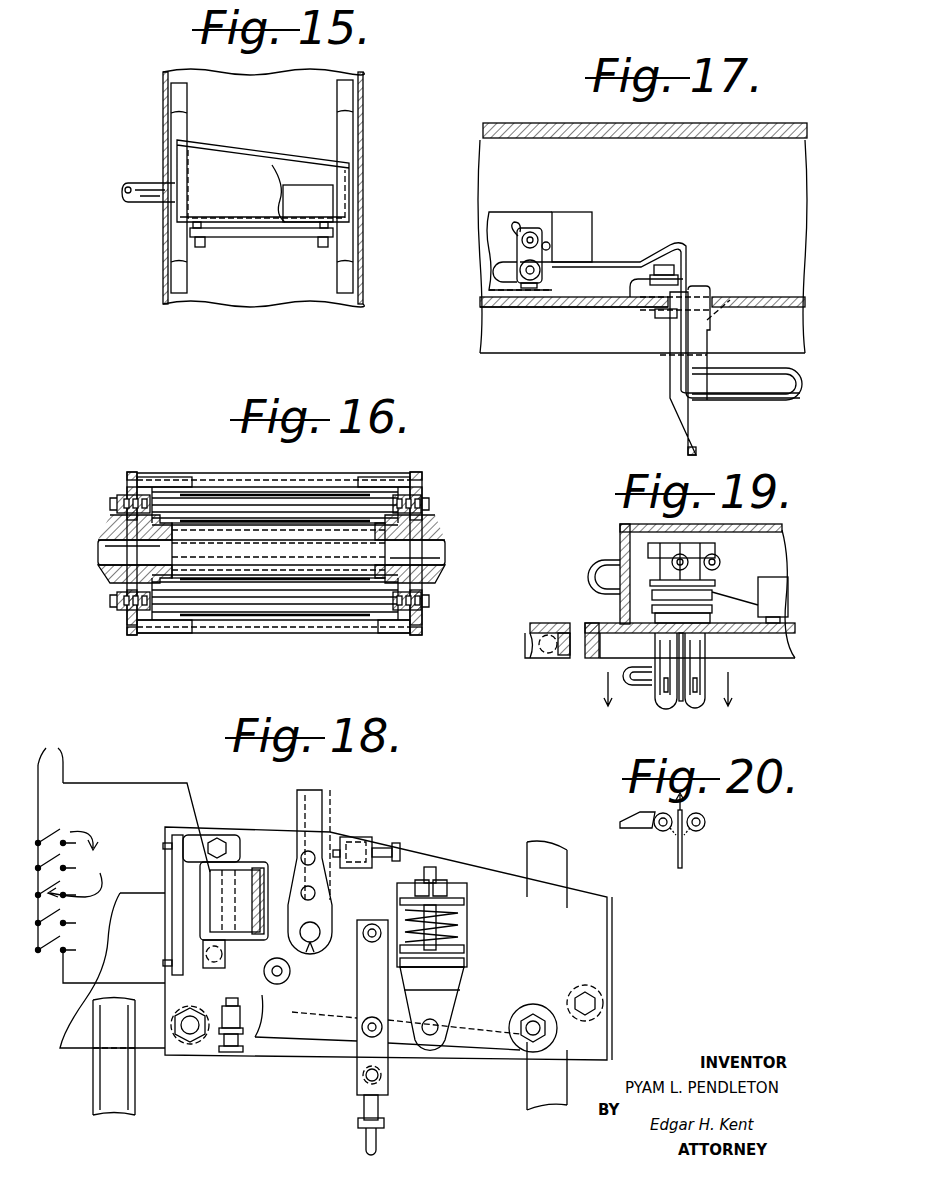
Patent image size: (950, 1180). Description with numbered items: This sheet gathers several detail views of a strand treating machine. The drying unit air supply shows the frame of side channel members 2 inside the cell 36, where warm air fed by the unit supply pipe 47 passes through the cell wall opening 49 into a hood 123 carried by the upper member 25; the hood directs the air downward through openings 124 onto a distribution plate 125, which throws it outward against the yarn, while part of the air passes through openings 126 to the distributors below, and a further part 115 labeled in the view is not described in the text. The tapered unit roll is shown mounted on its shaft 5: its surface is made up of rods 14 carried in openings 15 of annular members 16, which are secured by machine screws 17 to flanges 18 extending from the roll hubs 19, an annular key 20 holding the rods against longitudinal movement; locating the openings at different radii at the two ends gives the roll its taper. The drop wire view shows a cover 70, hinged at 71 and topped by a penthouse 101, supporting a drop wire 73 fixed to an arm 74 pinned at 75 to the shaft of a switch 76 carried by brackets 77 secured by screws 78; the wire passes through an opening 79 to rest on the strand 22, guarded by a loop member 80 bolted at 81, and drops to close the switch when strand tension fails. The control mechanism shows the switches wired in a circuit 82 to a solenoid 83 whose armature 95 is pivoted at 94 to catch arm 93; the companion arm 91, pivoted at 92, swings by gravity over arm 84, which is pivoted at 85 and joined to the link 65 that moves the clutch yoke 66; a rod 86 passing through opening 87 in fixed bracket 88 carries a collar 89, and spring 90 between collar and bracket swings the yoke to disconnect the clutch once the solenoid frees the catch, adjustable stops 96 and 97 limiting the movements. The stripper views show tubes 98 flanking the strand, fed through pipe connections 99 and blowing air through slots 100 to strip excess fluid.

In FIG. 15, the side channel members 2 is at (337, 95).
In FIG. 16, the shaft 5 is at (120, 552).
In FIG. 16, the rods 14 is at (245, 500).
In FIG. 16, the openings 15 is at (422, 476).
In FIG. 16, the annular members 16 is at (133, 638).
In FIG. 16, the machine screws 17 is at (117, 502).
In FIG. 16, the flanges 18 is at (440, 540).
In FIG. 16, the roll hubs 19 is at (256, 580).
In FIG. 19, the annular key 20 is at (668, 689).
In FIG. 17, the strand of material 22 is at (730, 405).
In FIG. 19, the strand of material 22 is at (681, 667).
In FIG. 20, the strand of material 22 is at (683, 865).
In FIG. 15, the member of the uppermost fluid applying member 25 is at (262, 222).
In FIG. 15, the housing or cell 36 is at (180, 270).
In FIG. 15, the unit supply pipe 47 is at (145, 205).
In FIG. 15, the opening in cell wall 49 is at (162, 183).
In FIG. 18, the link 65 is at (362, 1147).
In FIG. 18, the bell crank clutch fork 66 is at (297, 801).
In FIG. 17, the cover 70 is at (768, 297).
In FIG. 19, the cover 70 is at (550, 623).
In FIG. 19, the hinge 71 is at (568, 658).
In FIG. 17, the drop wire 73 is at (770, 400).
In FIG. 19, the drop wire 73 is at (645, 667).
In FIG. 17, the arm 74 is at (517, 255).
In FIG. 17, the pin 75 is at (533, 236).
In FIG. 17, the switch 76 is at (505, 212).
In FIG. 18, the switch 76 is at (70, 895).
In FIG. 17, the brackets 77 is at (590, 233).
In FIG. 19, the brackets 77 is at (766, 577).
In FIG. 19, the screws 78 is at (758, 600).
In FIG. 17, the openings 79 is at (718, 290).
In FIG. 17, the loop shaped guard and stop members 80 is at (670, 365).
In FIG. 17, the bolt 81 is at (652, 318).
In FIG. 18, the electric circuit 82 is at (48, 758).
In FIG. 18, the solenoid 83 is at (250, 870).
In FIG. 18, the arm 84 is at (480, 1052).
In FIG. 18, the pivot 85 is at (537, 1020).
In FIG. 18, the rod 86 is at (435, 868).
In FIG. 18, the opening 87 is at (468, 955).
In FIG. 18, the fixed bracket 88 is at (468, 968).
In FIG. 18, the collar 89 is at (465, 898).
In FIG. 18, the spring 90 is at (462, 925).
In FIG. 18, the catch arm 91 is at (282, 1010).
In FIG. 18, the pivot 92 is at (291, 975).
In FIG. 18, the catch arm 93 is at (255, 1010).
In FIG. 18, the pivotal connection 94 is at (190, 1015).
In FIG. 18, the armature 95 is at (217, 947).
In FIG. 18, the adjustable stop 96 is at (371, 832).
In FIG. 18, the adjustable stop 97 is at (220, 1058).
In FIG. 19, the tubes 98 is at (681, 705).
In FIG. 20, the tubes 98 is at (655, 830).
In FIG. 19, the pipe connections 99 is at (650, 548).
In FIG. 19, the slots 100 is at (660, 690).
In FIG. 20, the slots 100 is at (675, 835).
In FIG. 17, the penthouse 101 is at (538, 125).
In FIG. 19, the penthouse 101 is at (624, 524).
In FIG. 15, the wire 115 is at (278, 215).
In FIG. 15, the hood 123 is at (285, 160).
In FIG. 15, the openings 124 is at (212, 222).
In FIG. 15, the distribution plate 125 is at (290, 225).
In FIG. 15, the openings 126 is at (258, 240).